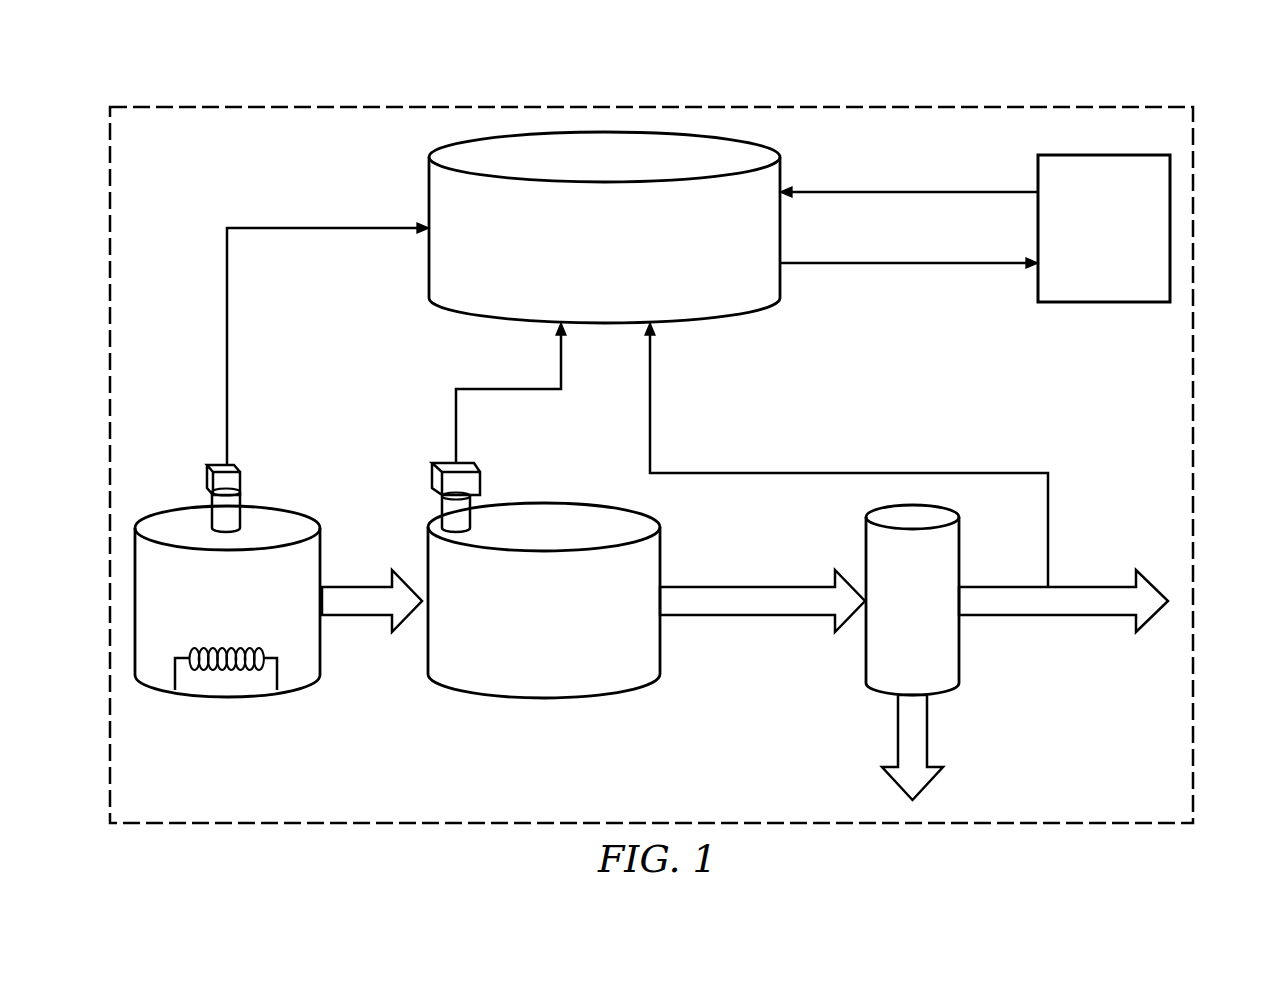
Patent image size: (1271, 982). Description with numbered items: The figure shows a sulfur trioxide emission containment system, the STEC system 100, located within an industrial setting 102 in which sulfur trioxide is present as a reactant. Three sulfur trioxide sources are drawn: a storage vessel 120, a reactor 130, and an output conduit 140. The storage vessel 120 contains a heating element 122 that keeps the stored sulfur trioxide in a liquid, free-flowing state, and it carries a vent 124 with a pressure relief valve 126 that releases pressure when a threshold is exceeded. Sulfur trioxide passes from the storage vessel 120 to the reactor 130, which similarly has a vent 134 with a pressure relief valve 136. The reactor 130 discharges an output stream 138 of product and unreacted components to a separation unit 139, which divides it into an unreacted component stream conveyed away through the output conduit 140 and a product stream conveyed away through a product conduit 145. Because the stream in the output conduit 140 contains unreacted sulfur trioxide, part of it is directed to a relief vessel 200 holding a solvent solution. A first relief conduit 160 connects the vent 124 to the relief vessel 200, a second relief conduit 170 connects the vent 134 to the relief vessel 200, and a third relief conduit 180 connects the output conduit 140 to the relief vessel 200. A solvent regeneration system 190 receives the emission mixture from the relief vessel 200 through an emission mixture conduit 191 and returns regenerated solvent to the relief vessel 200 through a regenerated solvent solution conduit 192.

The STEC system 100 is at (104, 68).
The industrial setting 102 is at (1195, 135).
The storage vessel 120 is at (246, 612).
The heating element 122 is at (206, 650).
The vent 124 is at (211, 497).
The pressure relief valve 126 is at (243, 481).
The reactor 130 is at (561, 637).
The vent 134 is at (441, 503).
The pressure relief valve 136 is at (482, 480).
The output stream 138 is at (712, 587).
The separation unit 139 is at (931, 625).
The output conduit 140 is at (1012, 616).
The product conduit 145 is at (929, 728).
The first relief conduit 160 is at (229, 340).
The second relief conduit 170 is at (506, 389).
The third relief conduit 180 is at (812, 473).
The solvent regeneration system 190 is at (1121, 238).
The emission mixture conduit 191 is at (875, 263).
The regenerated solvent solution conduit 192 is at (875, 192).
The relief vessel 200 is at (623, 262).